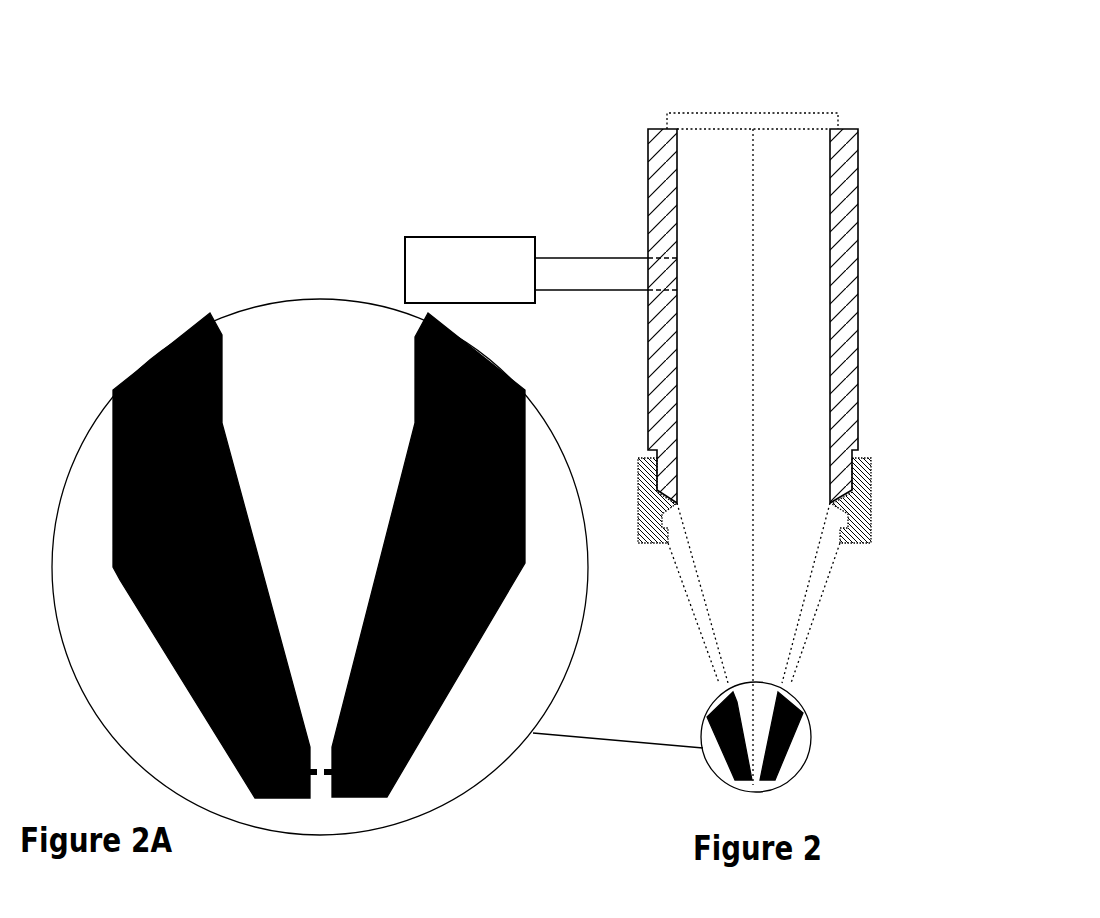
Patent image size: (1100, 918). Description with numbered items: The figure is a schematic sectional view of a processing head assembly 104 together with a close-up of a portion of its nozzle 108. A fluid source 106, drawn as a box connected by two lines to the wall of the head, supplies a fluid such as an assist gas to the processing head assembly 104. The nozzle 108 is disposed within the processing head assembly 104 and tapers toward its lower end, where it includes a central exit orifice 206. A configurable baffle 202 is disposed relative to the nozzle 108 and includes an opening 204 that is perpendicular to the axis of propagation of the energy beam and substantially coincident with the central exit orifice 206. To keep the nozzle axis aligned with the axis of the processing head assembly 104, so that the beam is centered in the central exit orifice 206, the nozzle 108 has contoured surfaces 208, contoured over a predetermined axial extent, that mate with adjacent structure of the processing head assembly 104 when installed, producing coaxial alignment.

In FIG. 2, the processing head assembly 104 is at (945, 109).
In FIG. 2, the fluid source 106 is at (481, 235).
In FIG. 2, the nozzle 108 is at (682, 597).
In FIG. 2, the contoured surfaces 208 is at (655, 497).
In FIG. 2A, the configurable baffle 202 is at (311, 778).
In FIG. 2A, the opening 204 is at (321, 750).
In FIG. 2A, the central exit orifice 206 is at (330, 818).